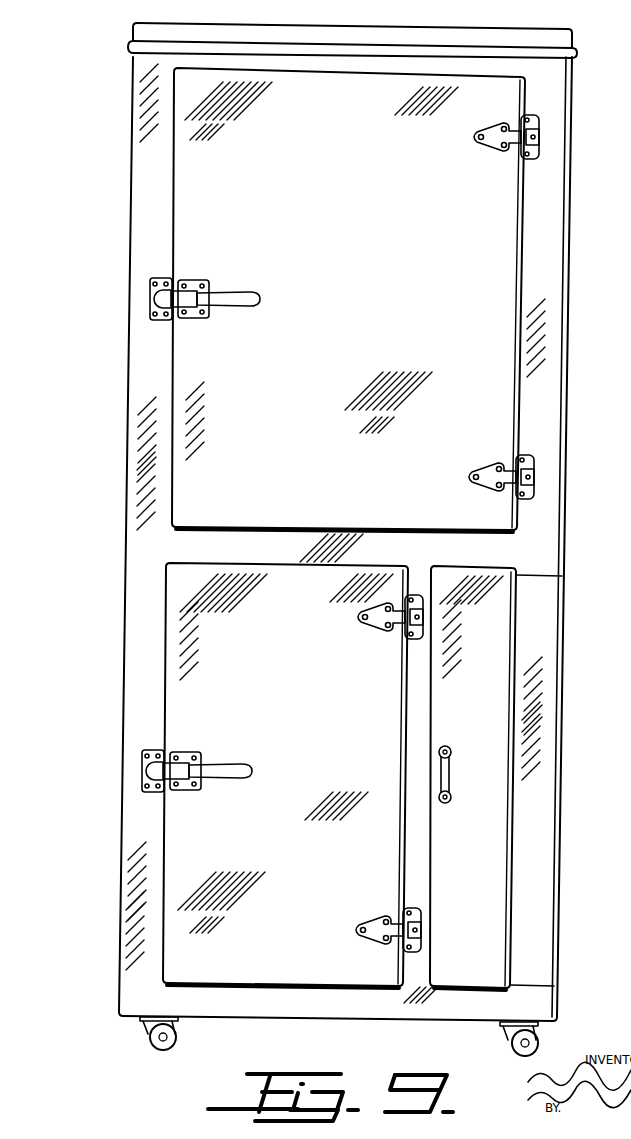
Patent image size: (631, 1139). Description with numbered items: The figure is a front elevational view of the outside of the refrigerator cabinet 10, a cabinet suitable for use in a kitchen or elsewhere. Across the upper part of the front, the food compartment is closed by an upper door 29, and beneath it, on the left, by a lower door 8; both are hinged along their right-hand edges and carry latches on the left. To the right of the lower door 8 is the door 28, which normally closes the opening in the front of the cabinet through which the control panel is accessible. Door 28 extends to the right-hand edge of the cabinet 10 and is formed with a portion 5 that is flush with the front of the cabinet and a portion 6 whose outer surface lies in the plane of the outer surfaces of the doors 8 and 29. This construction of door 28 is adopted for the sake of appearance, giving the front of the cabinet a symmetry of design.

The refrigerator cabinet 10 is at (127, 444).
The upper door 29 is at (344, 300).
The lower door 8 is at (282, 775).
The door 28 is at (473, 778).
The portion 6 is at (514, 600).
The portion 5 is at (550, 633).